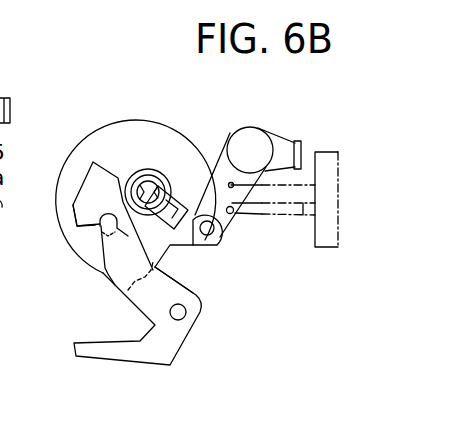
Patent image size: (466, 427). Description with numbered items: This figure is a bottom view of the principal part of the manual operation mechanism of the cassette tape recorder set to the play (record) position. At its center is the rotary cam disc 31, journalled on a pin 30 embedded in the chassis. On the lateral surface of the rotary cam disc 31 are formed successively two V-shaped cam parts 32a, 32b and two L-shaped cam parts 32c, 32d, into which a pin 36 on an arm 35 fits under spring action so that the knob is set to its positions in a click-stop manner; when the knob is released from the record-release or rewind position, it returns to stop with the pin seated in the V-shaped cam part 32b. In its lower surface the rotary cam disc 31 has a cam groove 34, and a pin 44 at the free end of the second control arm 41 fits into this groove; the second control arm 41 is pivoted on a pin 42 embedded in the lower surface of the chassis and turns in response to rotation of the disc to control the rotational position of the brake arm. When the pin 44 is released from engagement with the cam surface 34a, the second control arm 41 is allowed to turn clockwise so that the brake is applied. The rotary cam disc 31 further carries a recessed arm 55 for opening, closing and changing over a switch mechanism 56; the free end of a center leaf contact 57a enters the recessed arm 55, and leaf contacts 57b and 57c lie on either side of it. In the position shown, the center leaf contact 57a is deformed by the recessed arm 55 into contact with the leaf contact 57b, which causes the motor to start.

The rotary cam disc 31 is at (162, 122).
The pin 30 is at (152, 182).
The recessed arm 55 is at (180, 196).
The cam groove 34 is at (83, 180).
The cam surface 34a is at (77, 225).
The pin 44 is at (106, 238).
The pin 36 is at (193, 234).
The arm 35 is at (215, 165).
The leaf contact 57c is at (303, 184).
The leaf contact 57b is at (264, 216).
The center leaf contact 57a is at (303, 222).
The switch mechanism 56 is at (340, 198).
The V-shaped cam part 32a is at (222, 245).
The V-shaped cam part 32b is at (183, 248).
The L-shaped cam part 32c is at (158, 267).
The L-shaped cam part 32d is at (128, 291).
The pin 42 is at (187, 312).
The second control arm 41 is at (185, 341).